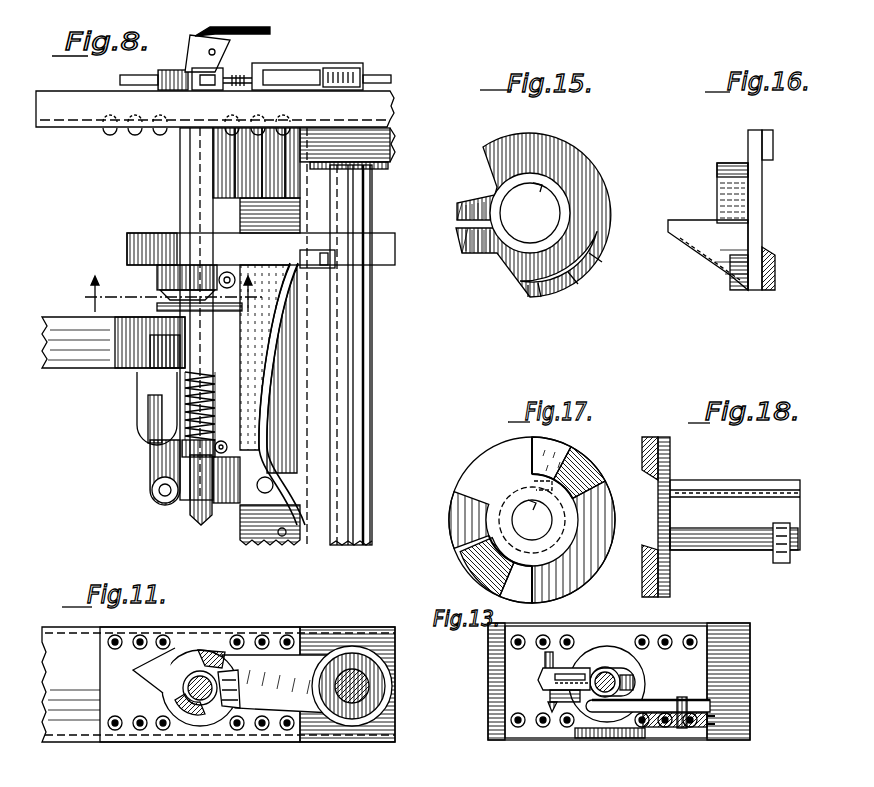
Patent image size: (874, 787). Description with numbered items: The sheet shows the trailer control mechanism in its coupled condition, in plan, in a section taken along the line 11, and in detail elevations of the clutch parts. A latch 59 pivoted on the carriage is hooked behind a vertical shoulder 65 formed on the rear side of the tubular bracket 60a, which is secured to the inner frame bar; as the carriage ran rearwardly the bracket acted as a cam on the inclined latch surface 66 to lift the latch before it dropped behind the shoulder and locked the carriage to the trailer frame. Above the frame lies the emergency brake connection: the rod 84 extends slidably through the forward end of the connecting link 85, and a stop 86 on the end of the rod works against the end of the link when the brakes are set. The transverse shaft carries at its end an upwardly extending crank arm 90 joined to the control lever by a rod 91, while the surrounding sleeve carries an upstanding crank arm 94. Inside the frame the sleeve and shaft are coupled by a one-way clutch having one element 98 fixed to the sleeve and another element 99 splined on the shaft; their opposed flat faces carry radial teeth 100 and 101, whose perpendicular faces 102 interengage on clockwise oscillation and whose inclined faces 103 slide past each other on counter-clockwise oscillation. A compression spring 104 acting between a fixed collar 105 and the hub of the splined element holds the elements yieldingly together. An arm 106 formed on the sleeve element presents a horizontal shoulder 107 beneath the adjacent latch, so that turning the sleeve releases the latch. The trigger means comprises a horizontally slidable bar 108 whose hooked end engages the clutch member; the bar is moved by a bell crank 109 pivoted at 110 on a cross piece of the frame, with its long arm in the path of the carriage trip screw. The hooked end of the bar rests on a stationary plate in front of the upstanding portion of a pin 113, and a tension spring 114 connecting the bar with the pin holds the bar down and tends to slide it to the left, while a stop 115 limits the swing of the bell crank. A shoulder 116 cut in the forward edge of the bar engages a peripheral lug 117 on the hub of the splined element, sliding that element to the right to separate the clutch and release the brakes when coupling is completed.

In FIG. 8, the section line 11— 11 is at (158, 302).
In FIG. 8, the latch 59 is at (290, 248).
In FIG. 11, the latch 59 is at (312, 662).
In FIG. 8, the bracket 60a is at (198, 180).
In FIG. 8, the vertical shoulder 65 is at (185, 208).
In FIG. 11, the vertical shoulder 65 is at (185, 700).
In FIG. 11, the inclined latch surface 66 is at (150, 682).
In FIG. 8, the rod 84 is at (392, 80).
In FIG. 8, the connecting link 85 is at (362, 70).
In FIG. 8, the stop 86 is at (318, 68).
In FIG. 8, the crank arm 90 is at (220, 62).
In FIG. 8, the rod 91 is at (272, 32).
In FIG. 8, the crank arm 94 is at (170, 74).
In FIG. 11, the clutch element 98 is at (190, 660).
In FIG. 16, the clutch element 98 is at (755, 193).
In FIG. 8, the clutch element 99 is at (165, 292).
In FIG. 18, the clutch element 99 is at (692, 553).
In FIG. 17, the radial teeth 100 is at (558, 458).
In FIG. 11, the radial teeth 101 is at (222, 668).
In FIG. 16, the radial teeth 101 is at (765, 145).
In FIG. 11, the perpendicular face 102 is at (210, 722).
In FIG. 15, the perpendicular face 102 is at (520, 275).
In FIG. 17, the perpendicular face 102 is at (532, 455).
In FIG. 16, the inclined face 103 is at (772, 268).
In FIG. 17, the inclined face 103 is at (588, 470).
In FIG. 18, the inclined face 103 is at (665, 458).
In FIG. 8, the compression spring 104 is at (177, 453).
In FIG. 8, the fixed collar 105 is at (197, 503).
In FIG. 13, the fixed collar 105 is at (628, 676).
In FIG. 13, the arm 106 is at (540, 678).
In FIG. 16, the arm 106 is at (735, 270).
In FIG. 8, the horizontal shoulder 107 is at (152, 280).
In FIG. 15, the horizontal shoulder 107 is at (603, 245).
In FIG. 16, the horizontal shoulder 107 is at (690, 220).
In FIG. 8, the slidable bar 108 is at (173, 473).
In FIG. 8, the bell crank 109 is at (285, 400).
In FIG. 13, the bell crank 109 is at (628, 722).
In FIG. 8, the pivot 110 is at (263, 488).
In FIG. 13, the pivot 110 is at (690, 730).
In FIG. 8, the pin 113 is at (152, 345).
In FIG. 13, the pin 113 is at (543, 656).
In FIG. 8, the tension spring 114 is at (175, 400).
In FIG. 8, the stop 115 is at (286, 533).
In FIG. 11, the stop 115 is at (382, 706).
In FIG. 13, the shoulder 116 is at (590, 652).
In FIG. 17, the shoulder 116 is at (560, 592).
In FIG. 8, the peripheral lug 117 is at (172, 385).
In FIG. 13, the peripheral lug 117 is at (590, 720).